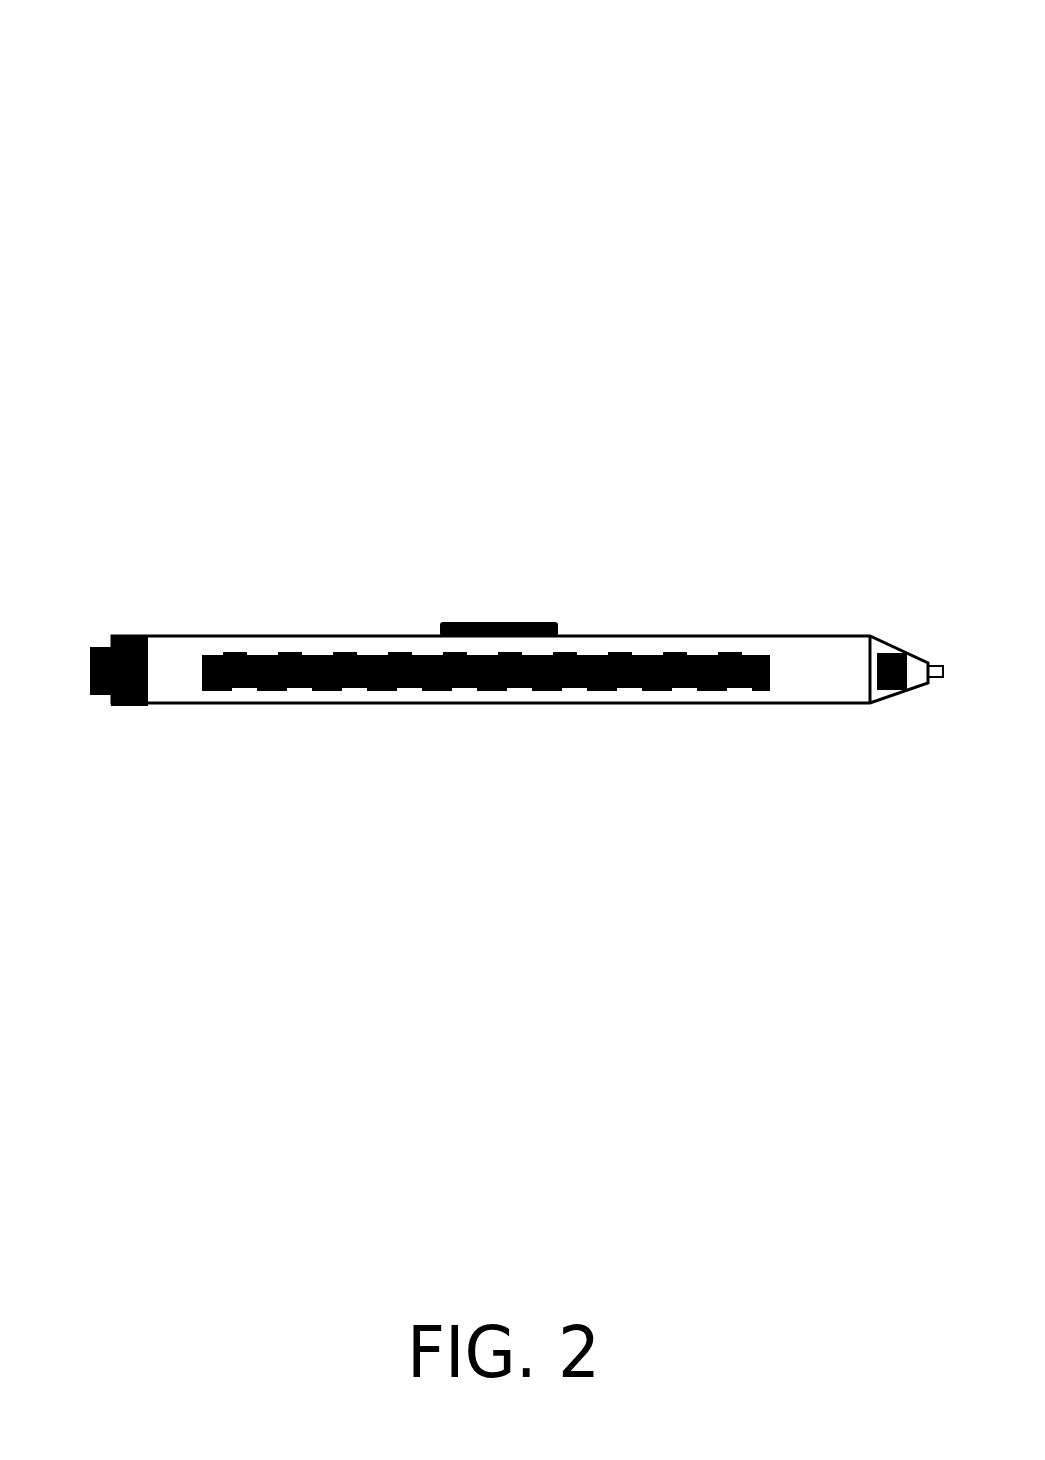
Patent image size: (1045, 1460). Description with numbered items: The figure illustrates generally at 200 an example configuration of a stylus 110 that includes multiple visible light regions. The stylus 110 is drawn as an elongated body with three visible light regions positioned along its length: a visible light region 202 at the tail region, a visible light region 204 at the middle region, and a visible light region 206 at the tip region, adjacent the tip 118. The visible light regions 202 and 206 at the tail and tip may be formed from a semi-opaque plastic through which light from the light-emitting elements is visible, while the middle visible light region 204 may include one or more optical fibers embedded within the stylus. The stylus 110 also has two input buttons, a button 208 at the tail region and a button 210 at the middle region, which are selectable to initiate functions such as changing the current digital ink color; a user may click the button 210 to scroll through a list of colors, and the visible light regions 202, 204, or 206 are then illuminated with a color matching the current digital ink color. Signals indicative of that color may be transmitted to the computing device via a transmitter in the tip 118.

The example configuration 200 is at (160, 72).
The stylus 110 is at (329, 543).
The tip 118 is at (940, 664).
The button 208 is at (107, 645).
The visible light region 202 is at (128, 707).
The visible light region 204 is at (515, 680).
The visible light region 206 is at (892, 690).
The button 210 is at (498, 622).